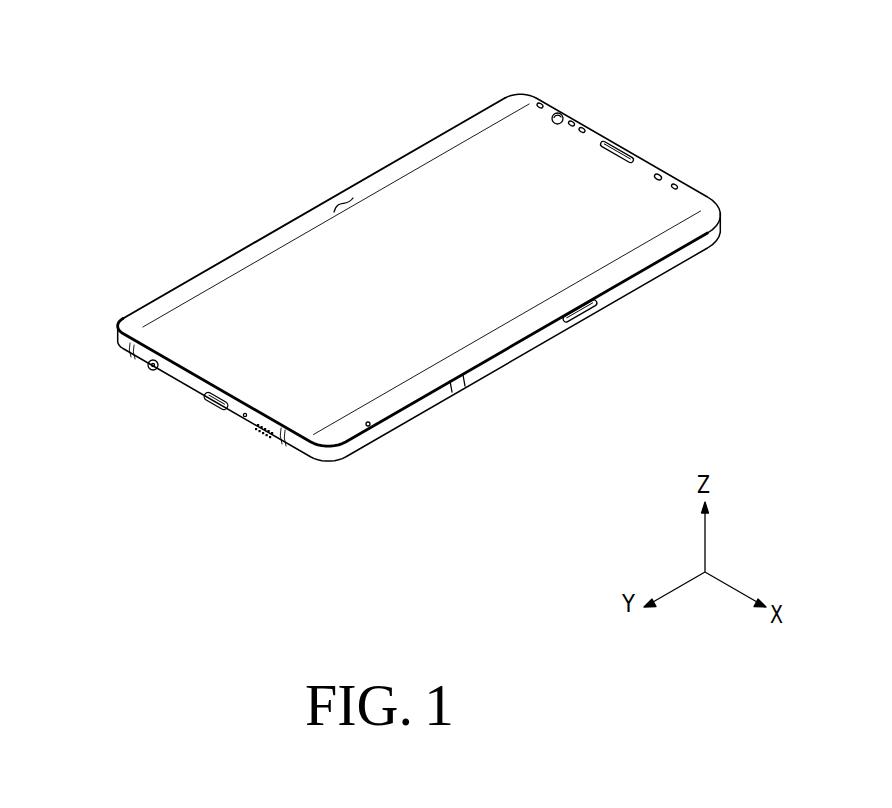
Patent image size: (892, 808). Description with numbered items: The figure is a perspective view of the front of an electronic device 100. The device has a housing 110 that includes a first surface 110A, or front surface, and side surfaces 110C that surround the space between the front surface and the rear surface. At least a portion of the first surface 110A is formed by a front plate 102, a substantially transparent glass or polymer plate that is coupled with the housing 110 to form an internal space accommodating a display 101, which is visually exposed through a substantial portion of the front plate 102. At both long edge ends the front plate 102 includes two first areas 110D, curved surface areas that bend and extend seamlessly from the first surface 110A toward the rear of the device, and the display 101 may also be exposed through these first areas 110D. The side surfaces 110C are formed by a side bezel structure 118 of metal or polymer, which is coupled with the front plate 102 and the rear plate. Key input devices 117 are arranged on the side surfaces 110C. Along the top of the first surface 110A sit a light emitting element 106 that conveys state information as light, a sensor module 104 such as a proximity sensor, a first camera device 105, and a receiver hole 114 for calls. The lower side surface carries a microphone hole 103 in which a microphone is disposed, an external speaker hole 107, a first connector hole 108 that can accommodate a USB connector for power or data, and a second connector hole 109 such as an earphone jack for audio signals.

The electronic device 100 is at (342, 69).
The display 101 is at (262, 298).
The front plate 102 is at (707, 213).
The microphone hole 103 is at (244, 420).
The sensor module 104 is at (582, 128).
The first camera device 105 is at (678, 184).
The light emitting element 106 is at (563, 116).
The external speaker hole 107 is at (262, 438).
The first connector hole 108 is at (212, 410).
The second connector hole 109 is at (150, 370).
The housing 110 is at (537, 343).
The first surface 110A is at (502, 176).
The side surfaces 110C is at (457, 390).
The first areas 110D is at (340, 197).
The receiver hole 114 is at (623, 143).
The key input devices 117 is at (580, 317).
The side bezel structure 118 is at (647, 277).